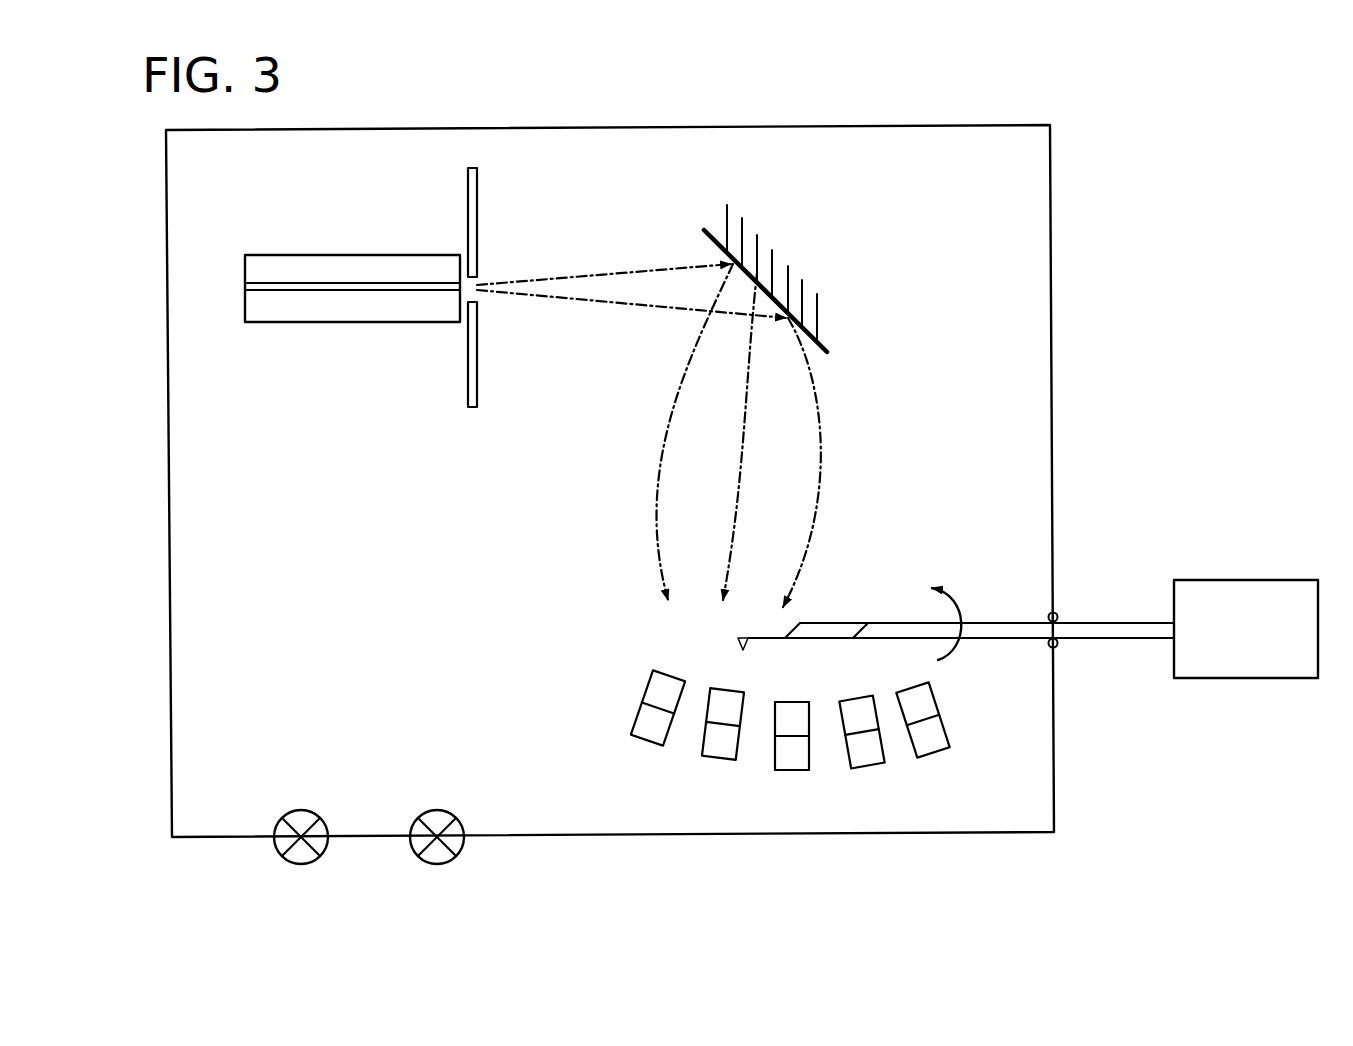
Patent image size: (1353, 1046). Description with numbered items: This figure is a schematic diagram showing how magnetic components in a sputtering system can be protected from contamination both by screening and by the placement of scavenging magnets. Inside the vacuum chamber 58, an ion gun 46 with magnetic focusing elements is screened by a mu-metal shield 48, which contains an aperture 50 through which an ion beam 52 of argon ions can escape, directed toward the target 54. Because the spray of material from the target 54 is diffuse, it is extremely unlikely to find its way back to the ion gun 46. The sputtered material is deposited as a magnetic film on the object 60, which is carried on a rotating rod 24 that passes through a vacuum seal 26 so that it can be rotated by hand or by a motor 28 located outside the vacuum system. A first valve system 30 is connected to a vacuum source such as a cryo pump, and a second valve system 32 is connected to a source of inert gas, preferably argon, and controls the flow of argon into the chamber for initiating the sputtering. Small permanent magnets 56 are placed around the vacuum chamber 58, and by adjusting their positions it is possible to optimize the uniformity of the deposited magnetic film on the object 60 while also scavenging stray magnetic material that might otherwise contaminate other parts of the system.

The rotating rod 24 is at (1054, 628).
The vacuum seal 26 is at (1061, 608).
The motor 28 is at (1257, 644).
The first valve system 30 is at (303, 810).
The second valve system 32 is at (440, 810).
The ion gun 46 is at (303, 323).
The mu-metal shield 48 is at (468, 377).
The aperture 50 is at (487, 275).
The ion beam 52 is at (605, 268).
The target 54 is at (824, 350).
The small permanent magnets 56 is at (717, 758).
The vacuum chamber 58 is at (1052, 305).
The object 60 is at (750, 643).